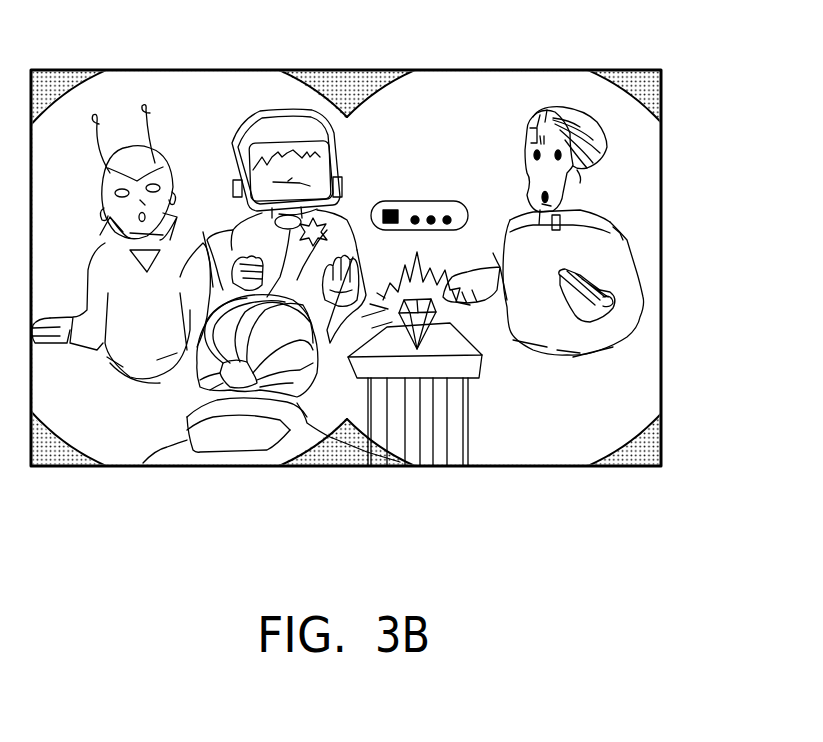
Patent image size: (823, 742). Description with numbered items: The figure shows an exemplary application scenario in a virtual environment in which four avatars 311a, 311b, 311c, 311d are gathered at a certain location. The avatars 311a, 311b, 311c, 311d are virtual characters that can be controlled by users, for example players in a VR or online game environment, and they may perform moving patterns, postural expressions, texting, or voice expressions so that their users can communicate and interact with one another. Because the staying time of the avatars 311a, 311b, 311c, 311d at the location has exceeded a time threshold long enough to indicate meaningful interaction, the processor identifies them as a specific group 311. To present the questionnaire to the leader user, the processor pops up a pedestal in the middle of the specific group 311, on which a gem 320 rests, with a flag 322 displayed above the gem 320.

The specific group 311 is at (702, 470).
The avatar 311a is at (288, 152).
The avatar 311b is at (124, 177).
The avatar 311c is at (560, 110).
The avatar 311d is at (238, 435).
The gem 320 is at (437, 326).
The flag 322 is at (417, 200).